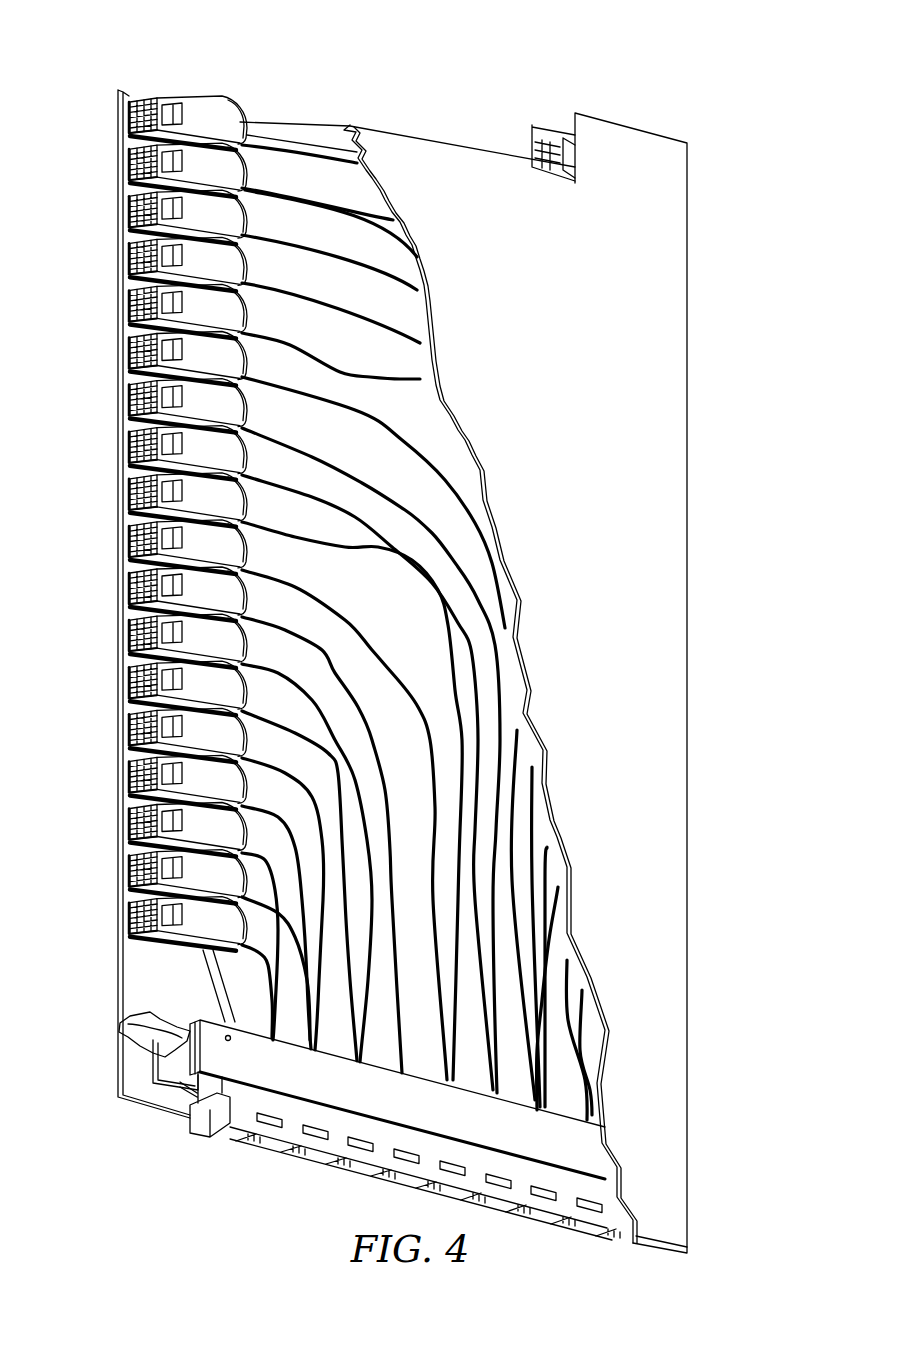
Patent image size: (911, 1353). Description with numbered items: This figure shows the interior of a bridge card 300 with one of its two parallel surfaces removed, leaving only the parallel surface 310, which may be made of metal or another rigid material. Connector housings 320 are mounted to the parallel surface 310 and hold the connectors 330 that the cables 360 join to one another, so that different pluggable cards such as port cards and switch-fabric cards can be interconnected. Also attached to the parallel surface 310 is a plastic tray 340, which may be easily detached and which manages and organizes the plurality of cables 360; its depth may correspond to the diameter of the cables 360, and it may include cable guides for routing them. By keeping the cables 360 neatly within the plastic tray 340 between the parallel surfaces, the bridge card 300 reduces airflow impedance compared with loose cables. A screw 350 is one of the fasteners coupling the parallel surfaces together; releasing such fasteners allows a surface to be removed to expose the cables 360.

The bridge card 300 is at (514, 66).
The parallel surface 310 is at (308, 134).
The connector housings 320 is at (150, 93).
The connectors 330 is at (140, 118).
The plastic tray 340 is at (370, 197).
The screw 350 is at (135, 1035).
The cables 360 is at (400, 320).